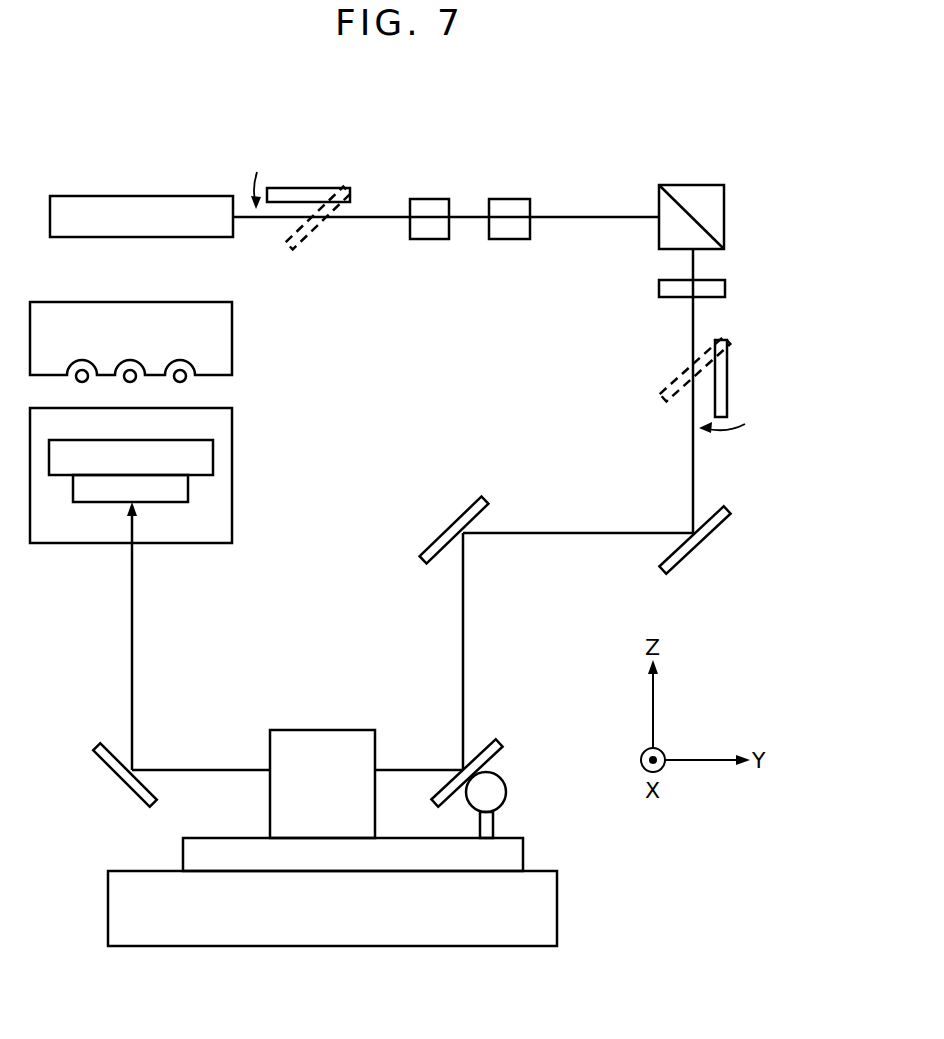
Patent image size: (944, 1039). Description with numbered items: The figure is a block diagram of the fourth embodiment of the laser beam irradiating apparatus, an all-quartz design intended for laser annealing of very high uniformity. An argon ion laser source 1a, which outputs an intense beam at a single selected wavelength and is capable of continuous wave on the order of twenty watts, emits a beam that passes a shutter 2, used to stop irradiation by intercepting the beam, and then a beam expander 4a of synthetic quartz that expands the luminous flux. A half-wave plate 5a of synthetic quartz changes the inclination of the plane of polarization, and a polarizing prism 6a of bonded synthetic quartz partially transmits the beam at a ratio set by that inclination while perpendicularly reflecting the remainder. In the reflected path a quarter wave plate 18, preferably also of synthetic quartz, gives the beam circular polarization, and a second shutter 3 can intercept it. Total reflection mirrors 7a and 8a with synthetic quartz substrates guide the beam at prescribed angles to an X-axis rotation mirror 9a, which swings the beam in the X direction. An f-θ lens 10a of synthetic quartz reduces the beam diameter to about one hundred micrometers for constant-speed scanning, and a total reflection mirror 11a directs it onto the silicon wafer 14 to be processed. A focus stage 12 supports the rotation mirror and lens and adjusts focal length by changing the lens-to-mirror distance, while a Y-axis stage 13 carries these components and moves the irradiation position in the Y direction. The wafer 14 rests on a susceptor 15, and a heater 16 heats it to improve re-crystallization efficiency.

The argon ion laser source 1a is at (137, 196).
The shutter 2 is at (305, 189).
The beam expander 4a is at (428, 199).
The half-wave plate 5a is at (506, 199).
The polarizing prism 6a is at (690, 185).
The quarter wave plate 18 is at (725, 289).
The shutter 3 is at (727, 370).
The total reflection mirror 7a is at (718, 538).
The total reflection mirror 8a is at (435, 540).
The X-axis rotation mirror 9a is at (500, 754).
The f-θ lens 10a is at (307, 730).
The total reflection mirror 11a is at (113, 773).
The focus stage 12 is at (523, 853).
The Y-axis stage 13 is at (557, 915).
The silicon wafer 14 is at (188, 488).
The susceptor 15 is at (213, 457).
The heater 16 is at (232, 335).